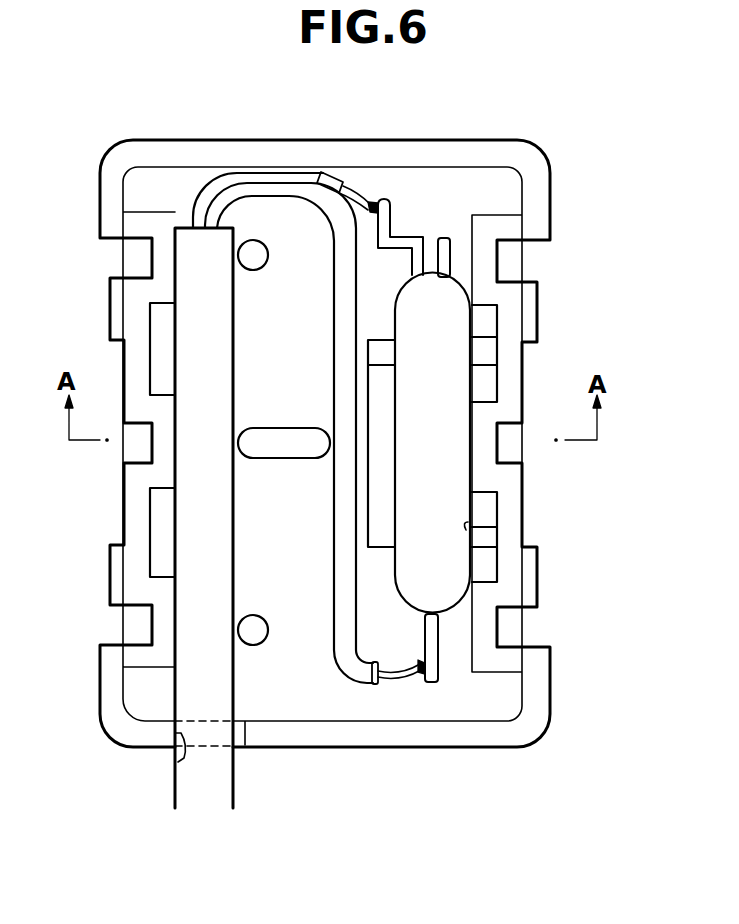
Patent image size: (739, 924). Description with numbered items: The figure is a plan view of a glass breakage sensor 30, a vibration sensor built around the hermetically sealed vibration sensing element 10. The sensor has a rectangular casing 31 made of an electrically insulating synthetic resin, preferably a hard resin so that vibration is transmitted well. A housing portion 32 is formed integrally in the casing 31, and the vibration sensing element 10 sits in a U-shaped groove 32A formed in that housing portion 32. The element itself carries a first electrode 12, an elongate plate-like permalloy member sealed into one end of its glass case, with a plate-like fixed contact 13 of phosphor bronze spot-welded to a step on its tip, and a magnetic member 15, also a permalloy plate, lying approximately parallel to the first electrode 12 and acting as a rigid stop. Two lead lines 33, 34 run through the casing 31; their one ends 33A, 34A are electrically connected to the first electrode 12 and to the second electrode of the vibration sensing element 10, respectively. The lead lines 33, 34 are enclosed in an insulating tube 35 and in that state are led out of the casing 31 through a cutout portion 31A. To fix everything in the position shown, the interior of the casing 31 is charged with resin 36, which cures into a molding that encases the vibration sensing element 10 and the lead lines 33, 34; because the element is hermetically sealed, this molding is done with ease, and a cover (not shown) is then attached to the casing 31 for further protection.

The glass breakage sensor 30 is at (370, 449).
The casing 31 is at (535, 206).
The cutout portion 31A is at (181, 742).
The housing portion 32 is at (398, 498).
The U-shaped groove 32A is at (466, 530).
The lead line 33 is at (317, 172).
The one end of lead line 33A is at (361, 186).
The lead line 34 is at (356, 667).
The one end of lead line 34A is at (400, 678).
The insulating tube 35 is at (192, 505).
The resin 36 is at (267, 302).
The vibration sensing element 10 is at (495, 393).
The first electrode 12 is at (424, 243).
The fixed contact 13 is at (433, 628).
The magnetic member 15 is at (446, 257).